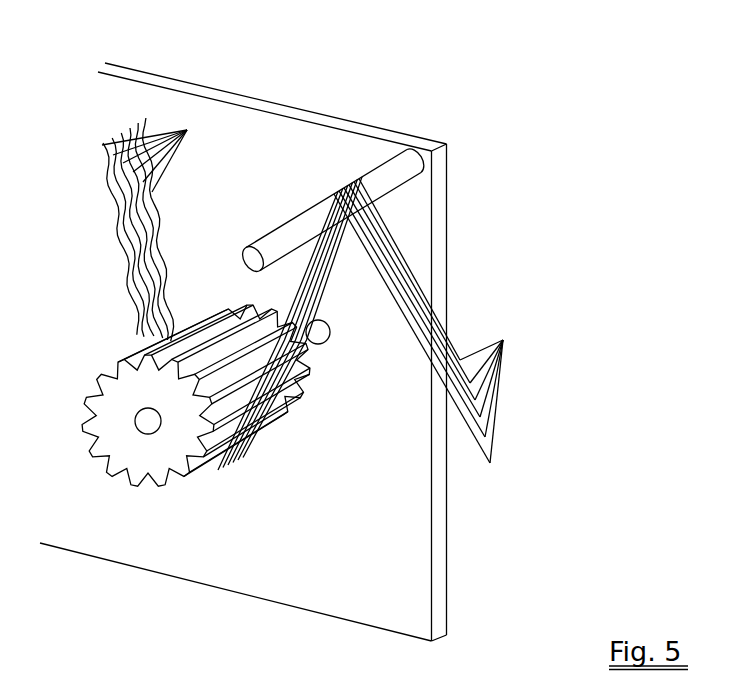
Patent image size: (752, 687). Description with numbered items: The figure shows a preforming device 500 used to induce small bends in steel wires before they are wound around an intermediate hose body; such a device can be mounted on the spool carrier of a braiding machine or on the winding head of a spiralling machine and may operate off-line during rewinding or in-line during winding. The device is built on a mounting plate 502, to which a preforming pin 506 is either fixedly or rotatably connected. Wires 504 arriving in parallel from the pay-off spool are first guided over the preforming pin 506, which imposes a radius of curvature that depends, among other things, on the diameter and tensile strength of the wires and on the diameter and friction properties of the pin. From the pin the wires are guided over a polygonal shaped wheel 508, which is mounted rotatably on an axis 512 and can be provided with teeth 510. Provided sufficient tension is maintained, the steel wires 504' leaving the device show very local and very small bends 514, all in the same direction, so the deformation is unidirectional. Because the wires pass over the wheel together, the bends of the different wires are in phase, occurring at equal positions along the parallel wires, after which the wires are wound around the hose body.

The preforming device 500 is at (523, 107).
The mounting plate 502 is at (372, 553).
The wires 504 is at (405, 323).
The steel wires leaving the preforming device 504' is at (186, 230).
The preforming pin 506 is at (412, 206).
The polygonal shaped wheel 508 is at (168, 402).
The teeth 510 is at (149, 344).
The axis 512 is at (365, 371).
The bends 514 is at (191, 229).